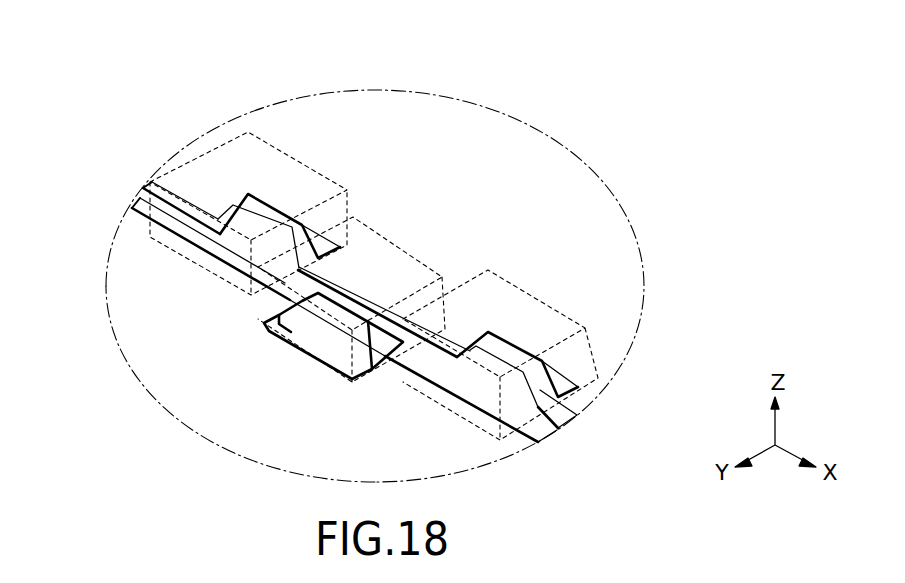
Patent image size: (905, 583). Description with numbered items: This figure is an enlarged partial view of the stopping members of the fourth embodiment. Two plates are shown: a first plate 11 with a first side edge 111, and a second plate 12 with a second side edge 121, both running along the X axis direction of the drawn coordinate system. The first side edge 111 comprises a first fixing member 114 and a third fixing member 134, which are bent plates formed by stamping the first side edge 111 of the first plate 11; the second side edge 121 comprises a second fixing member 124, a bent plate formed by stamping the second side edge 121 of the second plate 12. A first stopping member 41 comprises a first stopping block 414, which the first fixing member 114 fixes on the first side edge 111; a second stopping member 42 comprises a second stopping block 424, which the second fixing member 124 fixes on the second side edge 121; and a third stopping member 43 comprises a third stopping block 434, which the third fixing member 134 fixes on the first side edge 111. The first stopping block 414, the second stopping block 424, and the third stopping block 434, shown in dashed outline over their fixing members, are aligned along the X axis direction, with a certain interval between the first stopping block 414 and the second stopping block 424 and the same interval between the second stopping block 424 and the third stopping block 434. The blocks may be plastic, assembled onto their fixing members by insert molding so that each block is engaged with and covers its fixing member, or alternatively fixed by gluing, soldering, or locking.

The first plate 11 is at (606, 256).
The second plate 12 is at (178, 373).
The first side edge 111 is at (148, 188).
The first fixing member 114 is at (255, 222).
The second side edge 121 is at (176, 233).
The second fixing member 124 is at (366, 345).
The third fixing member 134 is at (572, 408).
The first stopping member 41 is at (300, 43).
The first stopping block 414 is at (291, 150).
The second stopping member 42 is at (589, 92).
The second stopping block 424 is at (395, 249).
The third stopping member 43 is at (726, 313).
The third stopping block 434 is at (584, 327).